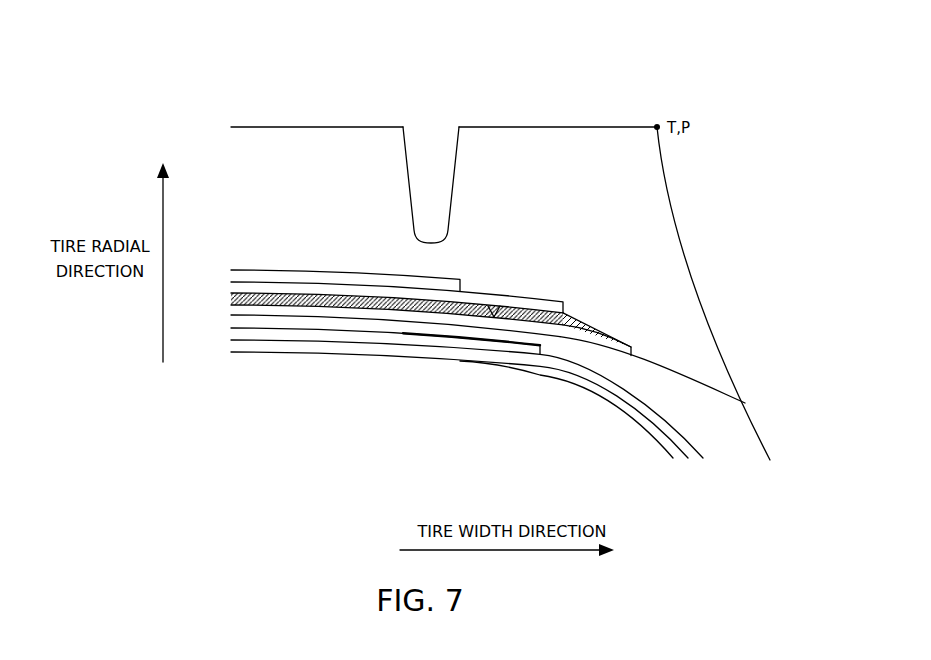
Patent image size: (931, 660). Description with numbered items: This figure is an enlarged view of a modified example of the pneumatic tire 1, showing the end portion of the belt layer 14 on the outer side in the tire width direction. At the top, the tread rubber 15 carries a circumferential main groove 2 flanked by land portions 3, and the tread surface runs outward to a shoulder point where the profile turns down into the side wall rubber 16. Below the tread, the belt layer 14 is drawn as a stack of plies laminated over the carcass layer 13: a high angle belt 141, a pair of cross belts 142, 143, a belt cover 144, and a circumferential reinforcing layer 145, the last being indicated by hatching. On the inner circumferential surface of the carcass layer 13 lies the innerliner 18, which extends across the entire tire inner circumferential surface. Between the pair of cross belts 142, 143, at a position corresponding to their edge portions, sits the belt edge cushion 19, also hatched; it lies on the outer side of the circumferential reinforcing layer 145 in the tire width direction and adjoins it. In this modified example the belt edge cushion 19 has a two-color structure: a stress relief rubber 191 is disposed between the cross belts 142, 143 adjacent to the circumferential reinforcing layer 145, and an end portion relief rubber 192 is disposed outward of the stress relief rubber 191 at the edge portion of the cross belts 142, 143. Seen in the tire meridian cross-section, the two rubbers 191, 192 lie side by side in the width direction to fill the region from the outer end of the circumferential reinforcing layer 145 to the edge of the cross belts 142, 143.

The pneumatic tire 1 is at (676, 96).
The circumferential main groove 2 is at (427, 142).
The land portion 3 is at (313, 122).
The carcass layer 13 is at (643, 410).
The belt layer 14 is at (185, 438).
The tread rubber 15 is at (675, 250).
The side wall rubber 16 is at (738, 412).
The innerliner 18 is at (608, 408).
The belt edge cushion 19 is at (462, 438).
The high angle belt 141 is at (405, 327).
The cross belt 142 is at (355, 313).
The cross belt 143 is at (303, 287).
The belt cover 144 is at (263, 275).
The circumferential reinforcing layer 145 is at (238, 305).
The stress relief rubber 191 is at (453, 312).
The end portion relief rubber 192 is at (557, 318).